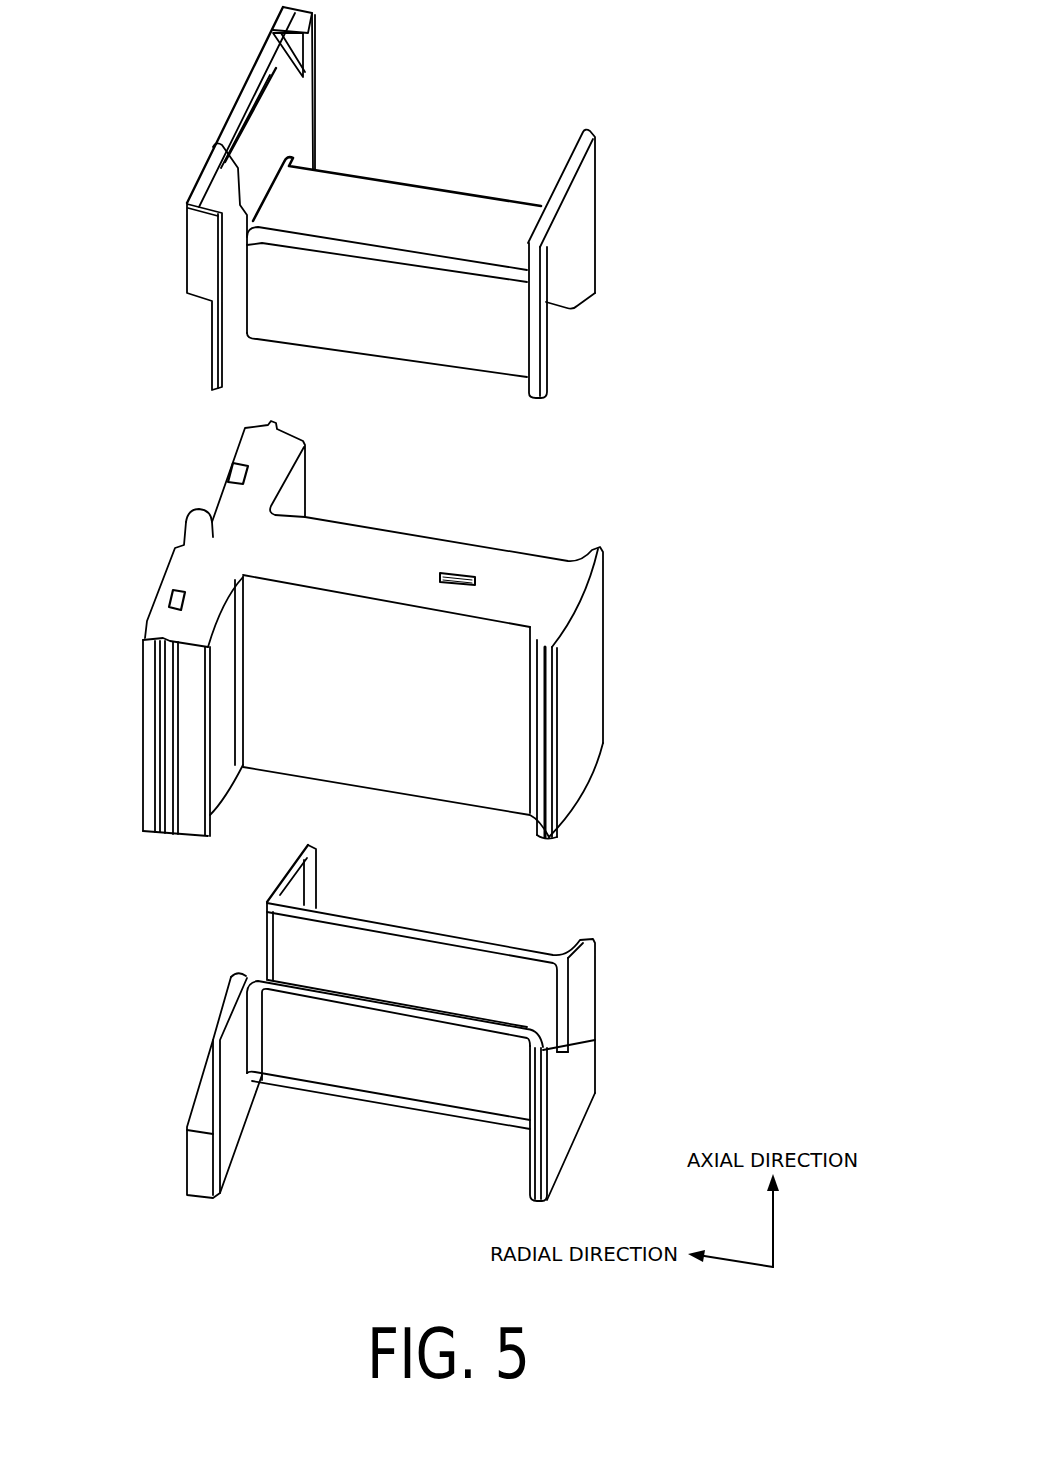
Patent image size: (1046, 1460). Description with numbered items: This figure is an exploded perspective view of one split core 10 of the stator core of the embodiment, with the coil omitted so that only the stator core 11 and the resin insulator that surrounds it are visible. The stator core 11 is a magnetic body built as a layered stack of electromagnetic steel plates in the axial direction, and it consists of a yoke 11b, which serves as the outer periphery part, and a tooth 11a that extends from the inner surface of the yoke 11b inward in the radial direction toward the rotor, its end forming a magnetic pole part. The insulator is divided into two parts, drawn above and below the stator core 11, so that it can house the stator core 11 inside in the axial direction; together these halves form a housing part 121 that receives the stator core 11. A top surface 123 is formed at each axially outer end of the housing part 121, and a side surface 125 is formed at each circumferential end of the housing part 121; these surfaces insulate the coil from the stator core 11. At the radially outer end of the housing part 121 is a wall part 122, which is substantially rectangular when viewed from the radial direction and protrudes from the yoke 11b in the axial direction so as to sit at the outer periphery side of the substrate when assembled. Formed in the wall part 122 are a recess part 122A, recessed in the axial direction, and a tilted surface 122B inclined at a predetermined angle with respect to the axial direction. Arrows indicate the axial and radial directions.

The split core 10 is at (392, 604).
The stator core 11 is at (210, 537).
The tooth 11a is at (580, 680).
The yoke 11b is at (142, 732).
The housing part 121 is at (573, 273).
The wall part 122 is at (206, 198).
The recess part 122A is at (237, 114).
The tilted surface 122B is at (288, 73).
The top surface 123 is at (475, 218).
The side surface 125 is at (420, 317).